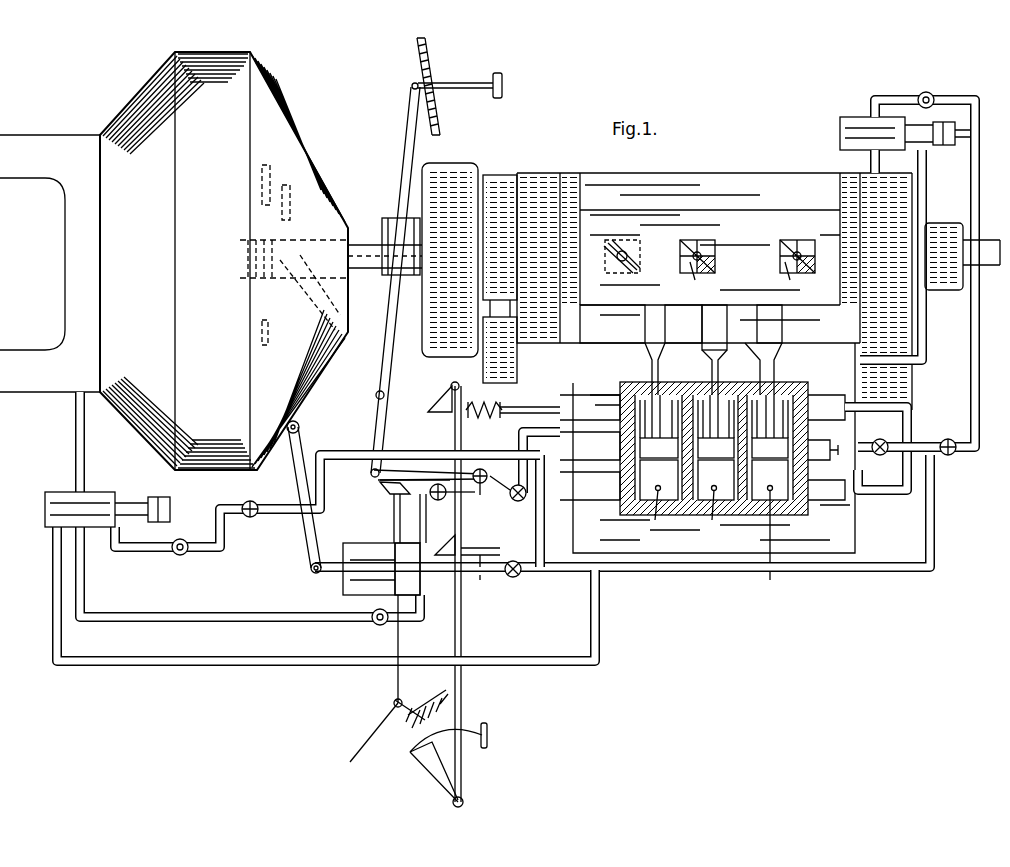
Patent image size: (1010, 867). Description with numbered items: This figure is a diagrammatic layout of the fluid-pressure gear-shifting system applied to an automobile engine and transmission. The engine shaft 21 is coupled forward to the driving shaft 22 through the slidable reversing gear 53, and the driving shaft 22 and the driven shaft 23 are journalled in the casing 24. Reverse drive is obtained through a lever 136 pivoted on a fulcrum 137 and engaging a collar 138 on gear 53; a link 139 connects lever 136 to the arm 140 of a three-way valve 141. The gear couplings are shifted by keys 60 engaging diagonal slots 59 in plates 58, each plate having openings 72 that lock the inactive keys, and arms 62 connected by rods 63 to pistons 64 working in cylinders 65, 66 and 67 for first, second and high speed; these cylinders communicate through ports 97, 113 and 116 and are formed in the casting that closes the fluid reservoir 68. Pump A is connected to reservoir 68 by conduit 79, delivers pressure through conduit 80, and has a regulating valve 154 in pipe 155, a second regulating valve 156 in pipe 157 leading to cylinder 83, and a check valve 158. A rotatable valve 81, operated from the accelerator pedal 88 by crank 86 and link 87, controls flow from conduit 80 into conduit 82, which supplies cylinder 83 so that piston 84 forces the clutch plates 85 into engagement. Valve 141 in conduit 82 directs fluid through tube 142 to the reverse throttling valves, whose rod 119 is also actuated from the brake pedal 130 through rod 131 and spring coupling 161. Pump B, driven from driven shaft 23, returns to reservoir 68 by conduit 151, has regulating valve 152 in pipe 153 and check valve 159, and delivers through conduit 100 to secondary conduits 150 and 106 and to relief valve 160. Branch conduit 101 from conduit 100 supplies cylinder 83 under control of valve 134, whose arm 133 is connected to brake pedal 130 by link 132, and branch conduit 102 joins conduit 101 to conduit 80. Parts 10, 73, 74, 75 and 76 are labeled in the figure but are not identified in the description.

The frame bracket 10 is at (50, 263).
The clutch plates 85 is at (272, 180).
The engine shaft 21 is at (365, 275).
The collar 138 is at (392, 218).
The lever 136 is at (404, 152).
The fulcrum 137 is at (376, 398).
The link 139 is at (495, 78).
The reversing gear 53 is at (458, 168).
The driving shaft 22 is at (492, 252).
The casing 24 is at (548, 180).
The diagonally disposed slot 59 is at (626, 250).
The conduit 80 is at (620, 262).
The openings 72 is at (700, 244).
The key 60 is at (743, 283).
The plate 58 is at (634, 305).
The arms 62 is at (788, 325).
The rods 63 is at (660, 365).
The fluid reservoir 68 is at (857, 540).
The secondary conduit 106 is at (880, 500).
The pistons 64 is at (714, 427).
The cylinder 67 is at (659, 480).
The cylinder 66 is at (716, 480).
The cylinder 65 is at (770, 480).
The port 116 is at (656, 517).
The port 113 is at (714, 517).
The port 97 is at (771, 546).
The cylinder B 75 is at (945, 122).
The pipe 153 is at (888, 95).
The regulating valve 152 is at (928, 86).
The pipe 76 is at (870, 152).
The conduit 100 is at (972, 182).
The conduit 151 is at (927, 326).
The driven shaft 23 is at (975, 262).
The secondary conduit 150 is at (907, 420).
The relief valve 160 is at (903, 458).
The check valve 159 is at (950, 456).
The branch conduit 101 is at (722, 573).
The branch conduit 102 is at (542, 540).
The arm 140 is at (455, 435).
The rod 131 is at (462, 400).
The spring coupling 161 is at (487, 400).
The rod 119 is at (540, 405).
The tube 142 is at (520, 432).
The pipe 74 is at (76, 446).
The conduit 79 is at (265, 656).
The pipe 157 is at (412, 620).
The regulating valve 156 is at (372, 622).
The pipe 155 is at (220, 552).
The regulating valve 154 is at (174, 554).
The check valve 158 is at (259, 497).
The cylinder A 73 is at (160, 500).
The cylinder 83 is at (390, 543).
The piston 84 is at (410, 585).
The link 87 is at (440, 465).
The crank 86 is at (388, 498).
The second conduit 82 is at (449, 503).
The rotatable valve 81 is at (481, 490).
The three way valve 141 is at (511, 499).
The arm 133 is at (512, 555).
The valve 134 is at (520, 576).
The link 132 is at (482, 570).
The accelerator pedal 88 is at (445, 690).
The brake pedal 130 is at (488, 735).